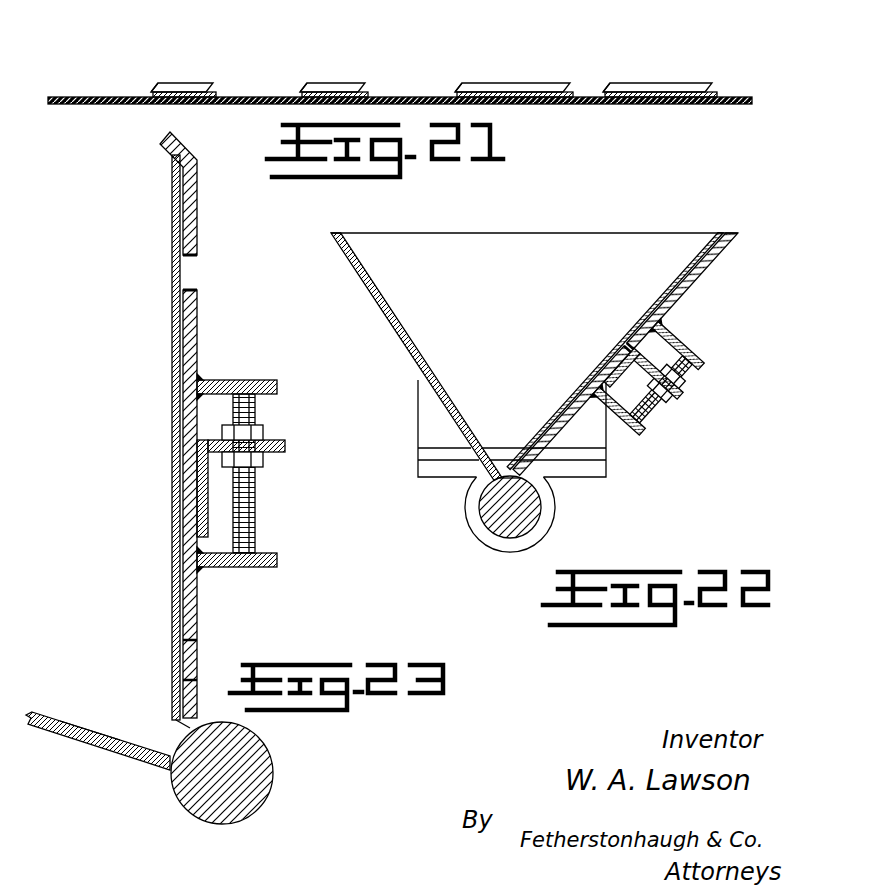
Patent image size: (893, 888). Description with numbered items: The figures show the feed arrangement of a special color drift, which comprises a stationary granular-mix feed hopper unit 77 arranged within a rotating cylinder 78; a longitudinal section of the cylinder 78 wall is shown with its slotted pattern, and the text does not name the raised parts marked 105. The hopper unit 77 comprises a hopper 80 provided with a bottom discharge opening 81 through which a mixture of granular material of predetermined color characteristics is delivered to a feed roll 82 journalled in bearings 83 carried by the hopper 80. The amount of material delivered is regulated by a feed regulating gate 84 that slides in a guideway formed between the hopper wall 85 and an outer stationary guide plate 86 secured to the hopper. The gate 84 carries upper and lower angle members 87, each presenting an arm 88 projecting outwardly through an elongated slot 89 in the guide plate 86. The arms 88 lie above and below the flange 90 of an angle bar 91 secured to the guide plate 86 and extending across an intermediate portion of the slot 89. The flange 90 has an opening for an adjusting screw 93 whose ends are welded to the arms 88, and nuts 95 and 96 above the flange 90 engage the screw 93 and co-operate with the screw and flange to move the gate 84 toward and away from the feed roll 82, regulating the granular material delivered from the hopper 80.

In FIG. 22, the feed hopper unit 77 is at (496, 232).
In FIG. 21, the rotating cylinder 78 is at (612, 105).
In FIG. 23, the rotating cylinder 78 is at (60, 745).
In FIG. 23, the hopper 80 is at (100, 752).
In FIG. 22, the hopper 80 is at (570, 250).
In FIG. 23, the bottom discharge opening 81 is at (182, 738).
In FIG. 22, the bottom discharge opening 81 is at (507, 470).
In FIG. 23, the feed roll 82 is at (260, 756).
In FIG. 22, the feed roll 82 is at (545, 510).
In FIG. 22, the bearings 83 is at (482, 545).
In FIG. 23, the feed regulating gate 84 is at (199, 662).
In FIG. 22, the feed regulating gate 84 is at (556, 432).
In FIG. 23, the hopper wall 85 is at (174, 490).
In FIG. 22, the hopper wall 85 is at (654, 323).
In FIG. 23, the outer stationary guide plate 86 is at (199, 240).
In FIG. 22, the outer stationary guide plate 86 is at (723, 268).
In FIG. 23, the angle members 87 is at (199, 378).
In FIG. 22, the angle members 87 is at (598, 421).
In FIG. 23, the arms 88 is at (274, 381).
In FIG. 22, the arms 88 is at (692, 356).
In FIG. 23, the elongated slot 89 is at (199, 276).
In FIG. 23, the flange 90 is at (287, 447).
In FIG. 22, the flange 90 is at (688, 402).
In FIG. 23, the angle bar 91 is at (204, 447).
In FIG. 22, the angle bar 91 is at (626, 366).
In FIG. 23, the adjusting screw 93 is at (257, 530).
In FIG. 22, the adjusting screw 93 is at (650, 410).
In FIG. 23, the nut 95 is at (260, 430).
In FIG. 22, the nut 95 is at (688, 382).
In FIG. 23, the nut 96 is at (262, 464).
In FIG. 22, the nut 96 is at (681, 408).
In FIG. 21, the cover plates 105 is at (306, 89).